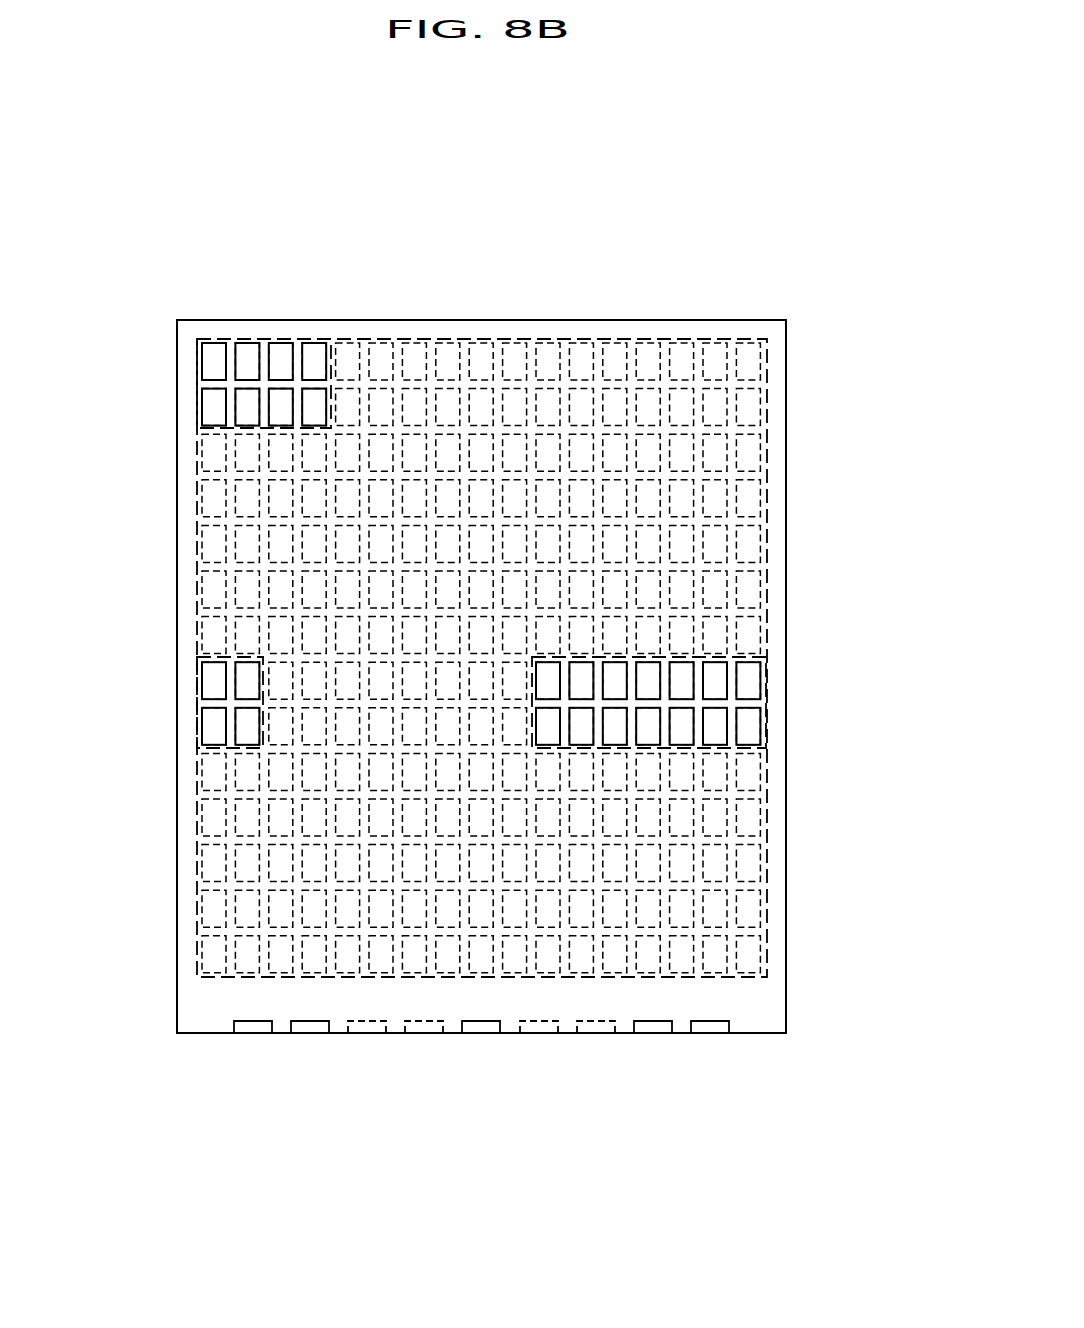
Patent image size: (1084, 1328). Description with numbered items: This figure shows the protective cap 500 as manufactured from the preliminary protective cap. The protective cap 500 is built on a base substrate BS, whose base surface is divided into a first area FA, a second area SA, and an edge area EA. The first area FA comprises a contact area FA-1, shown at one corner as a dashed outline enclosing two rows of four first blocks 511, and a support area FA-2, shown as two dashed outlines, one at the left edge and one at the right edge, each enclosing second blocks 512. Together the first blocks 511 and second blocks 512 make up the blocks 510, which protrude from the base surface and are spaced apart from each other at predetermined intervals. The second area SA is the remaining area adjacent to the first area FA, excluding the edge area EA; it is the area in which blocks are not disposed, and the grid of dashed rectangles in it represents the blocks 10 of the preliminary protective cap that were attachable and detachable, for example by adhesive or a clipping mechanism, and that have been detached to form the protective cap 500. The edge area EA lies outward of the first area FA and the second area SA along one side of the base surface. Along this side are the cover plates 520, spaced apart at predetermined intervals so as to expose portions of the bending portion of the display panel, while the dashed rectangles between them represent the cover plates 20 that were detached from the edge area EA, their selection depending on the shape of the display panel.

The protective cap 500 is at (750, 186).
The base substrate BS is at (730, 318).
The edge area EA is at (190, 997).
The second area SA is at (732, 452).
The blocks 10 is at (345, 352).
The cover plates 20 is at (365, 1030).
The contact area FA-1 is at (203, 339).
The support area FA-2 is at (479, 702).
The first area FA is at (864, 1180).
The first blocks 511 is at (279, 352).
The second blocks 512 is at (213, 728).
The blocks 510 is at (866, 1252).
The cover plates 520 is at (308, 1030).